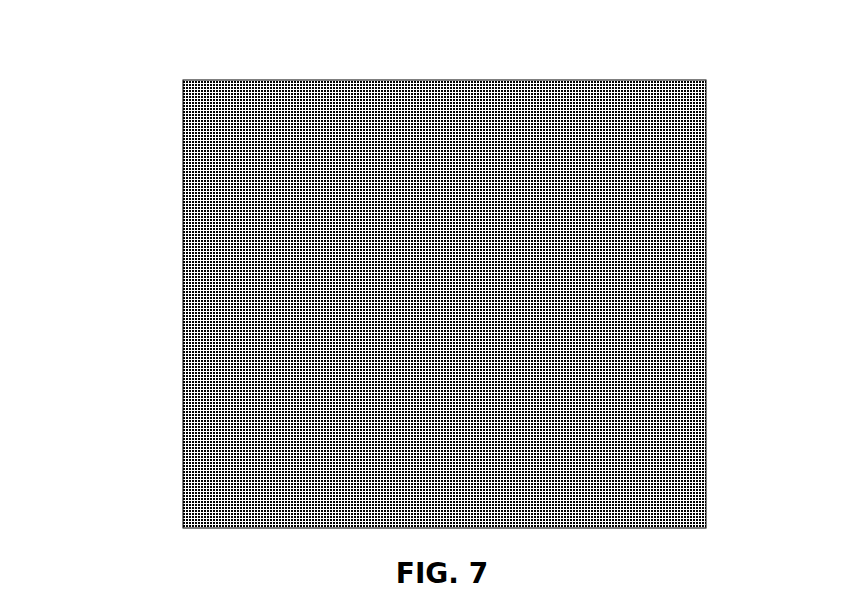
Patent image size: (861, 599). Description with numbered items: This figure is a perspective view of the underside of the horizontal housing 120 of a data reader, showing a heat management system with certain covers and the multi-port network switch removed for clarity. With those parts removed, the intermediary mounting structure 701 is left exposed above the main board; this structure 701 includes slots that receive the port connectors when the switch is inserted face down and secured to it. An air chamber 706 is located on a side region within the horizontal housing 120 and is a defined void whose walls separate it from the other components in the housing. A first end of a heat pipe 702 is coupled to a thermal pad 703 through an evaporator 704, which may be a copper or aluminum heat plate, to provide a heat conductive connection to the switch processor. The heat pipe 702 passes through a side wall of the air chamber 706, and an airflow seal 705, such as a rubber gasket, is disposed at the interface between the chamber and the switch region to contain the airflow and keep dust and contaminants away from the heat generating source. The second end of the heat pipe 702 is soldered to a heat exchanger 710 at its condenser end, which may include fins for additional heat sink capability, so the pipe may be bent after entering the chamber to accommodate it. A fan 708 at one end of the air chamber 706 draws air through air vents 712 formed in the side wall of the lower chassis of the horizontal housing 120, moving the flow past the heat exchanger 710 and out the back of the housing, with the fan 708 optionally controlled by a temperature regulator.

The horizontal housing 120 is at (731, 177).
The intermediary mounting structure 701 is at (387, 241).
The heat pipe 702 is at (400, 283).
The evaporator 704 is at (460, 281).
The thermal pad 703 is at (492, 273).
The heat exchanger 710 is at (271, 242).
The airflow seal 705 is at (301, 288).
The air chamber 706 is at (286, 323).
The fan 708 is at (285, 355).
The air vents 712 is at (238, 453).